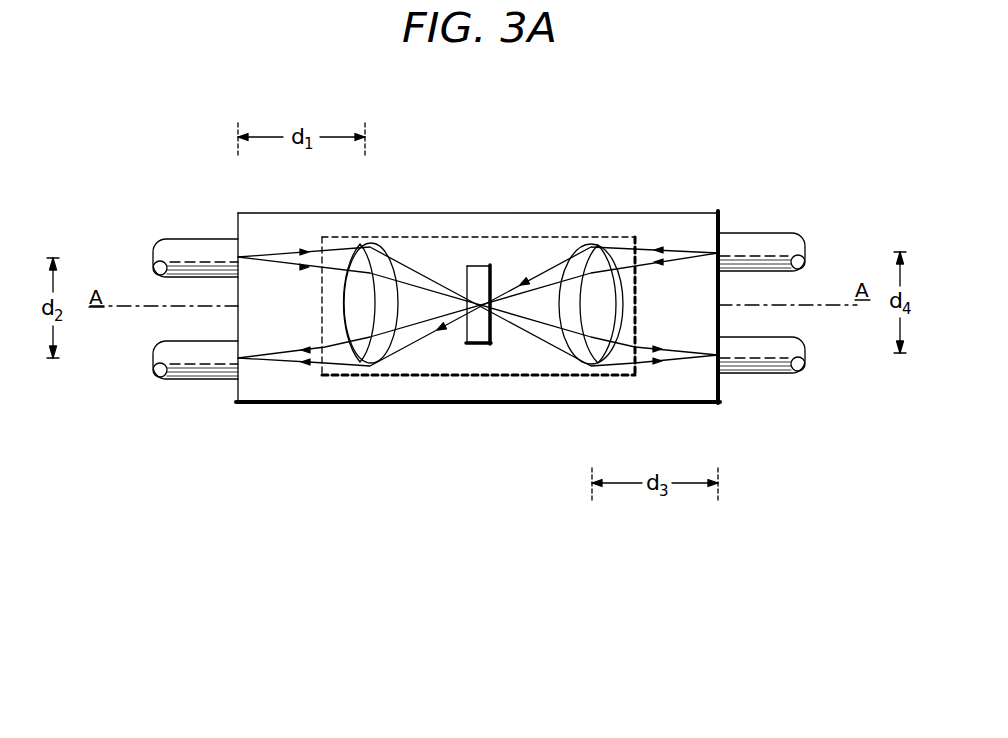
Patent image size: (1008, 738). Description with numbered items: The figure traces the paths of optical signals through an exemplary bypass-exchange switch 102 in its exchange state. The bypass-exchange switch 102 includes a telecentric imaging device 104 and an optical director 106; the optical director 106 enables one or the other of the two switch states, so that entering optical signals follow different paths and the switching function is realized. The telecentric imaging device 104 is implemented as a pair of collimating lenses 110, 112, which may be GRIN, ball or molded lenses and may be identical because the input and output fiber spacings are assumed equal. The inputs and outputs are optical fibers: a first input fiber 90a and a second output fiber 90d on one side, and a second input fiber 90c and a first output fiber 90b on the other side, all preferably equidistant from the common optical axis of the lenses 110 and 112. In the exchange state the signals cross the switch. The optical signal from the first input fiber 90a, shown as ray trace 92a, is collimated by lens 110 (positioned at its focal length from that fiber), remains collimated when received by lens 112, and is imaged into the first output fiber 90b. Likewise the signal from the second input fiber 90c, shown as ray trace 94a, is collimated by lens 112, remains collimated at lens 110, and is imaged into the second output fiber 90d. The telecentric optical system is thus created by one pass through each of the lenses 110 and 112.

The bypass-exchange switch 102 is at (581, 144).
The telecentric imaging device 104 is at (420, 252).
The optical director 106 is at (476, 345).
The collimating lens 110 is at (384, 320).
The collimating lens 112 is at (608, 320).
The first input fiber 90a is at (177, 247).
The first output fiber 90b is at (745, 374).
The second input fiber 90c is at (750, 242).
The second output fiber 90d is at (177, 362).
The ray trace 92a is at (287, 253).
The ray trace 94a is at (672, 252).